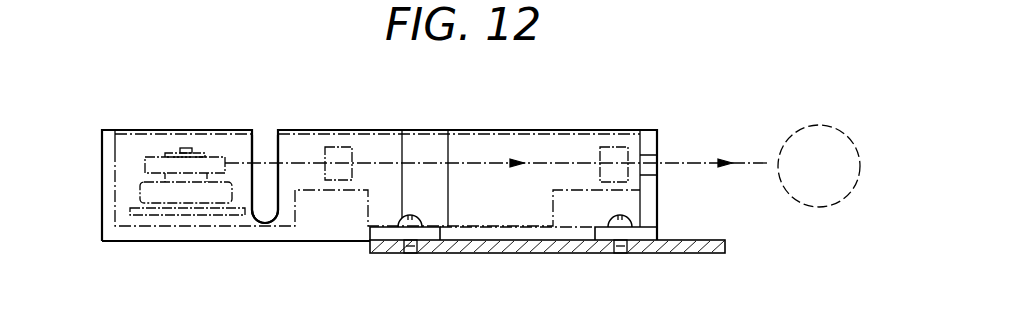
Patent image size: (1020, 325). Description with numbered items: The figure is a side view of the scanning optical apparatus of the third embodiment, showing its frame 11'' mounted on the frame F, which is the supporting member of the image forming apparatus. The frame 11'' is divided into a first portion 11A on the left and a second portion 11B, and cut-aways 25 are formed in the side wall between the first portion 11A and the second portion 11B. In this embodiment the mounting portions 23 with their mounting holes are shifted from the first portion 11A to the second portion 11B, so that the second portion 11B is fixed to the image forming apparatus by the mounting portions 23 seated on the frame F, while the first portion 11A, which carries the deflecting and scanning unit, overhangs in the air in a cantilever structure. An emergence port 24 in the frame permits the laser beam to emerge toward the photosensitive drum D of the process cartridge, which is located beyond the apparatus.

The frame 11'' is at (413, 174).
The first portion 11A is at (202, 130).
The cut-away 25 is at (266, 148).
The second portion 11B is at (530, 130).
The emergence port 24 is at (657, 160).
The photosensitive drum D is at (819, 125).
The mounting portion 23 is at (405, 253).
The frame F is at (692, 254).